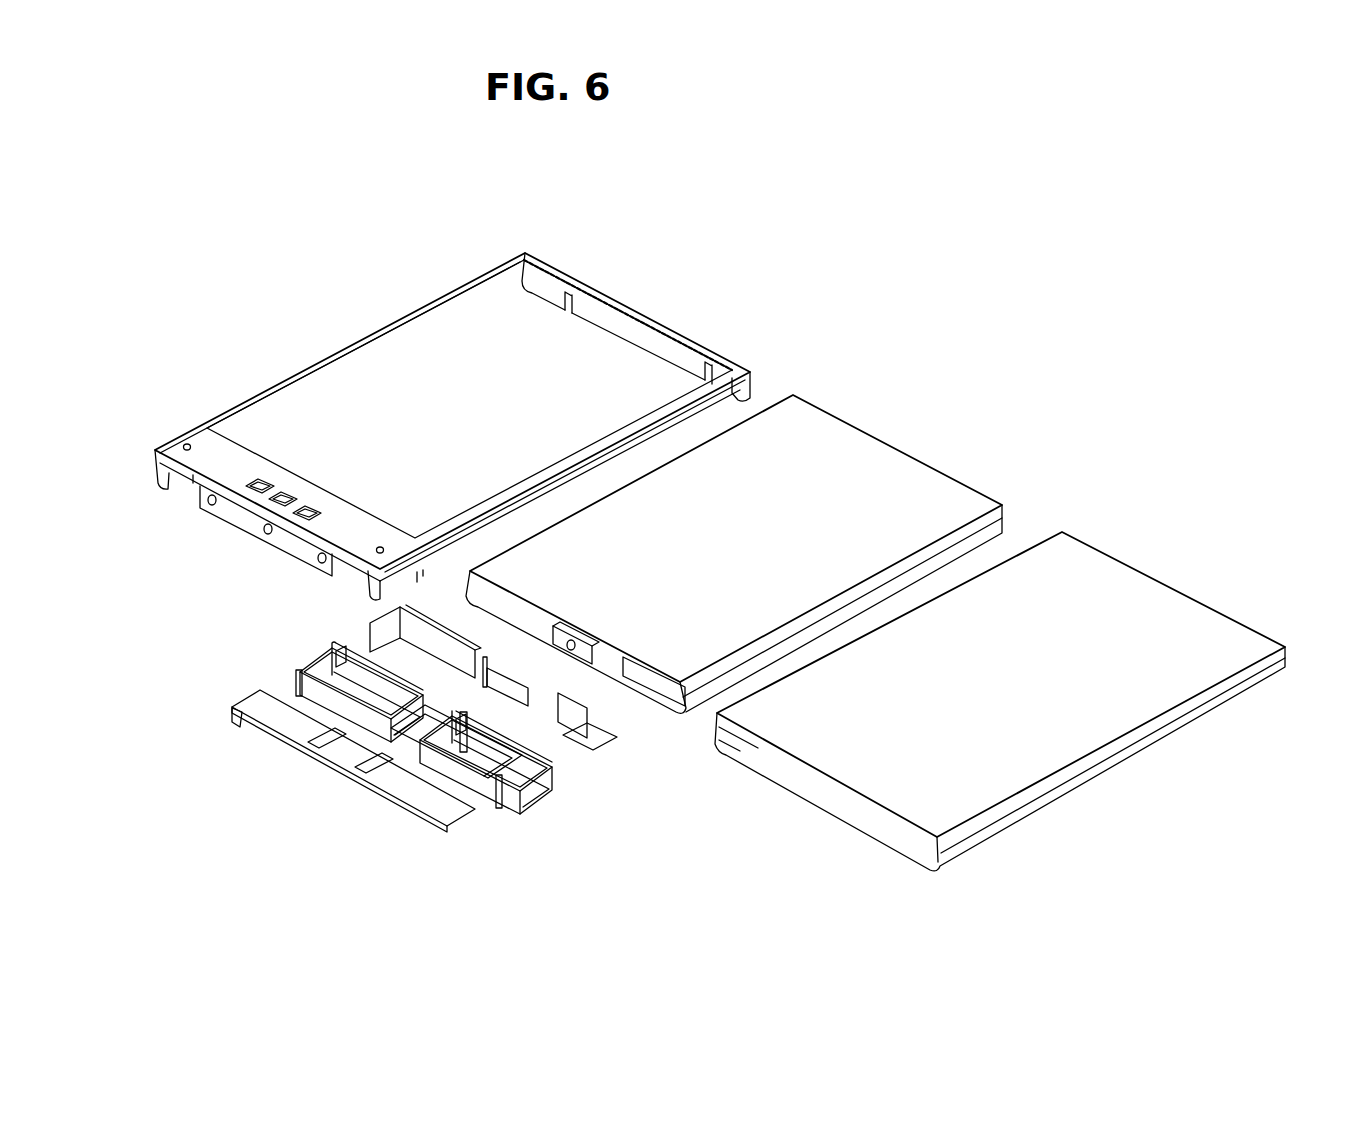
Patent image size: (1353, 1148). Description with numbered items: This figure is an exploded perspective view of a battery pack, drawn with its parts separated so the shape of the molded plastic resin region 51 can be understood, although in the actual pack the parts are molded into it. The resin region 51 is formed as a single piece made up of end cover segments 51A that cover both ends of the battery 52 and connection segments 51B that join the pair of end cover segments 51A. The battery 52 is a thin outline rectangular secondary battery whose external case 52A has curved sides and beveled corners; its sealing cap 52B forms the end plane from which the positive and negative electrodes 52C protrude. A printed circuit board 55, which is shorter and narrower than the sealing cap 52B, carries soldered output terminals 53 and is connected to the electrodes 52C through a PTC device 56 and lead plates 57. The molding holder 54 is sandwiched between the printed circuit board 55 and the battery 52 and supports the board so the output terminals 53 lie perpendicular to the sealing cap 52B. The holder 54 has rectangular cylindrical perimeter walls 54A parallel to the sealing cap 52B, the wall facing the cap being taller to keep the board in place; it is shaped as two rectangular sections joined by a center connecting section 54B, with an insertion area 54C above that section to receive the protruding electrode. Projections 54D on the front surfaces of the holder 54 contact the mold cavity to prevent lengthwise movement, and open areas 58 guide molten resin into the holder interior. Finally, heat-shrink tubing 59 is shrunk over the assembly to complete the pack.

The molded plastic resin region 51 is at (172, 407).
The end cover segment 51A is at (233, 508).
The connection segment 51B is at (345, 348).
The battery 52 is at (905, 437).
The external case 52A is at (753, 552).
The sealing cap 52B is at (522, 607).
The positive and negative electrodes 52C is at (583, 650).
The output terminals 53 is at (323, 743).
The molding holder 54 is at (537, 810).
The perimeter walls 54A is at (345, 670).
The center connecting section 54B is at (407, 747).
The insertion area 54C is at (373, 732).
The projections 54D is at (297, 688).
The printed circuit board 55 is at (272, 713).
The PTC device 56 is at (435, 645).
The lead plates 57 is at (240, 723).
The open areas 58 is at (325, 670).
The tubing 59 is at (1110, 573).